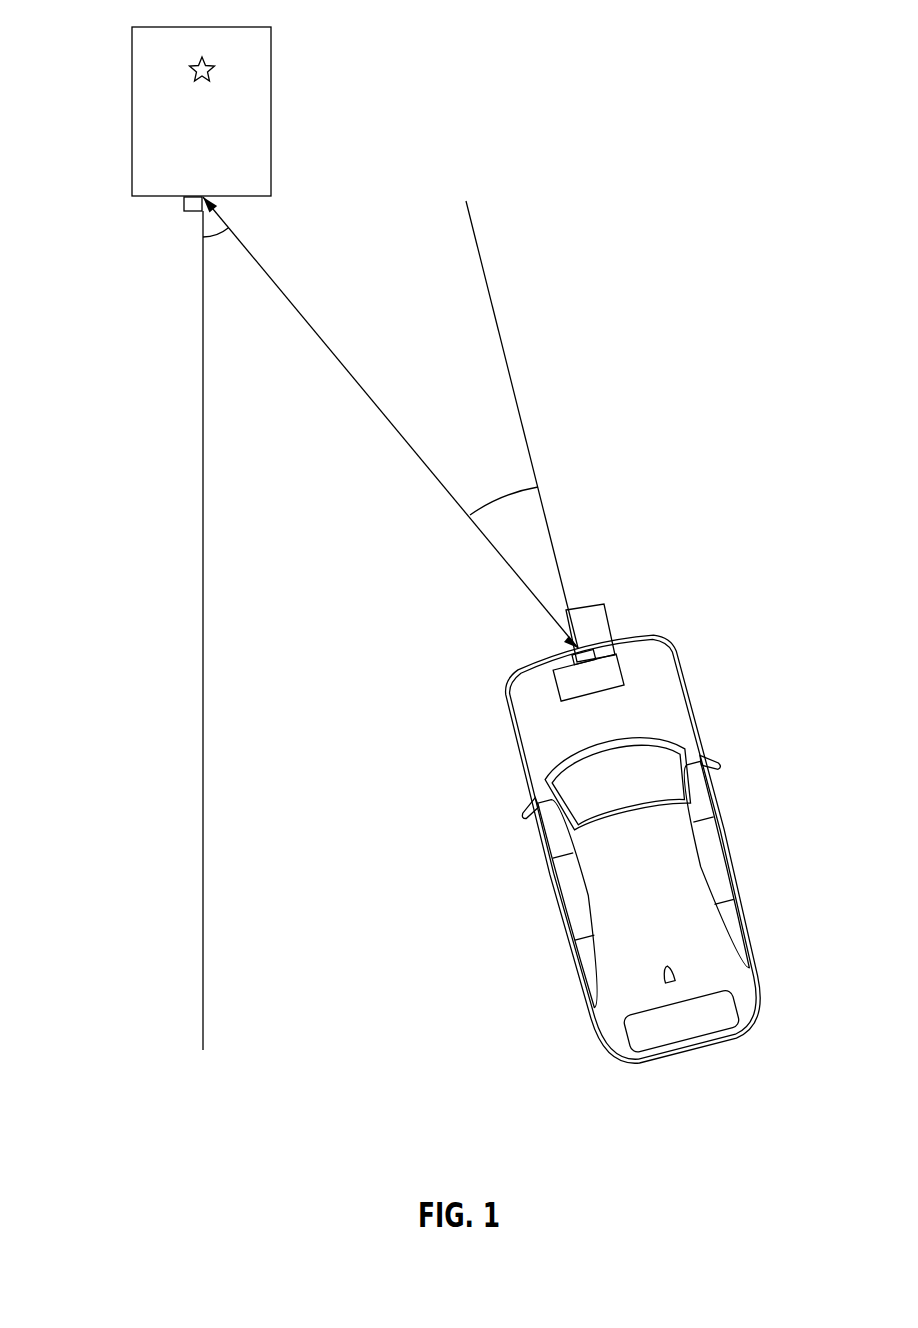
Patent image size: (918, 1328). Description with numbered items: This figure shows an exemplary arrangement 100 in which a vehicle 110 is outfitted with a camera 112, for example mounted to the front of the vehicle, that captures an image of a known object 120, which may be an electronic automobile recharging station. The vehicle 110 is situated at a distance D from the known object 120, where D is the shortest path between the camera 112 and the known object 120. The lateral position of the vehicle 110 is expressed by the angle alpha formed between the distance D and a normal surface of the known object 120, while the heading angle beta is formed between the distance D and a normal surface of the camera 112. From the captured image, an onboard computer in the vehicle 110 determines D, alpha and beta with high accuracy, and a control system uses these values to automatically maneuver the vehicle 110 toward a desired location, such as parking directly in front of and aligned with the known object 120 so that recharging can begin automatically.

The system 100 is at (718, 98).
The vehicle 110 is at (700, 750).
The camera 112 is at (550, 688).
The known object 120 is at (132, 113).